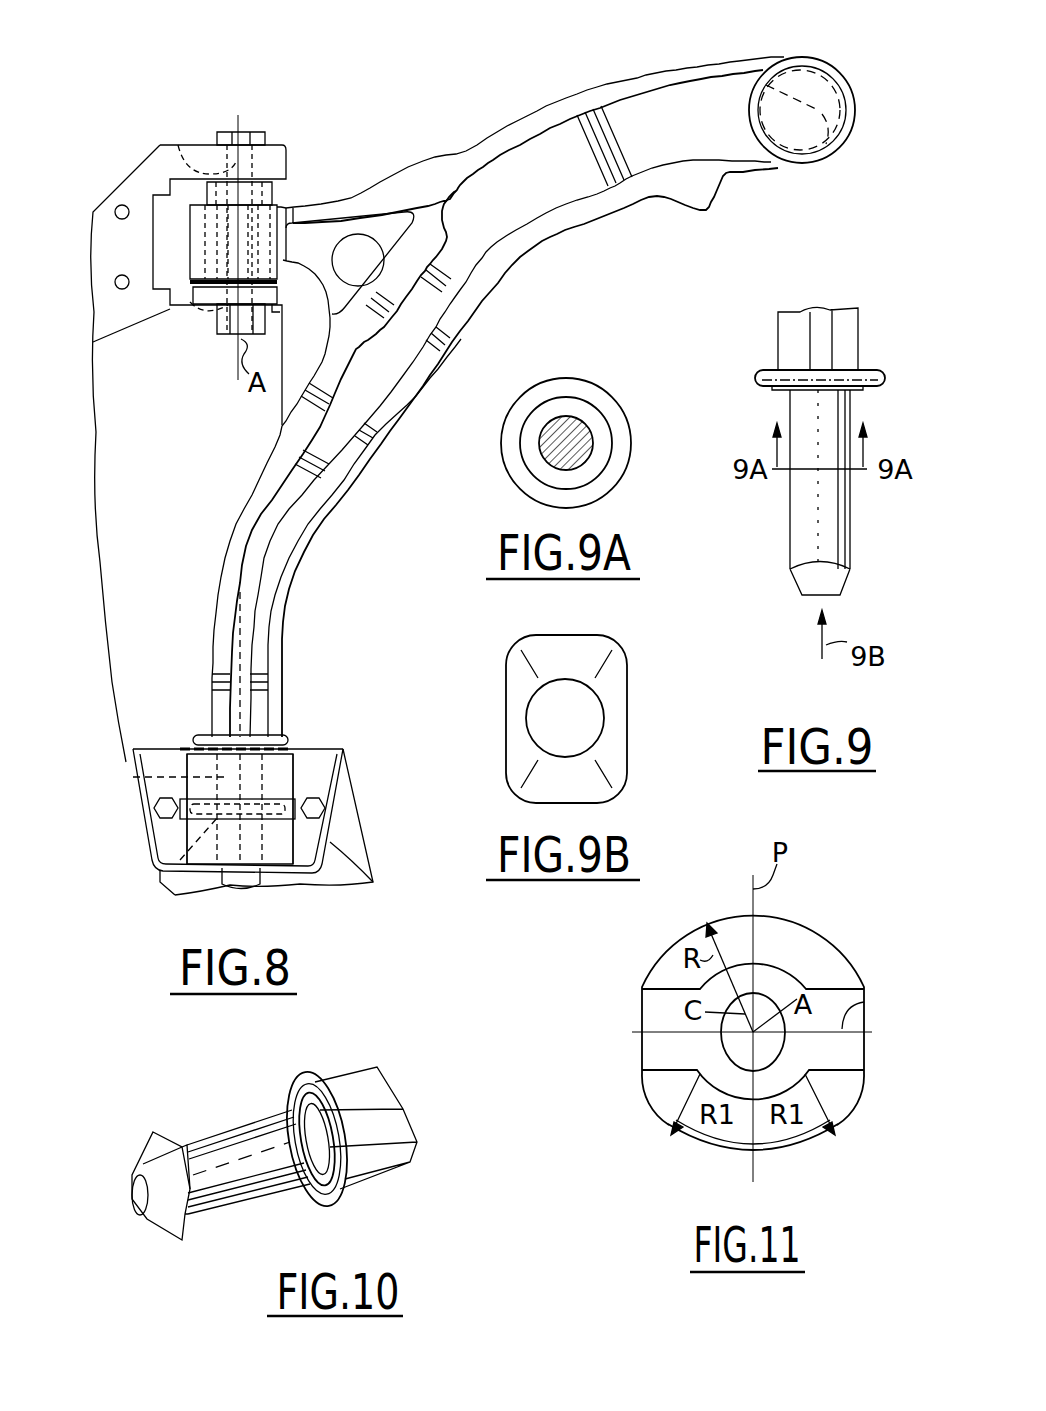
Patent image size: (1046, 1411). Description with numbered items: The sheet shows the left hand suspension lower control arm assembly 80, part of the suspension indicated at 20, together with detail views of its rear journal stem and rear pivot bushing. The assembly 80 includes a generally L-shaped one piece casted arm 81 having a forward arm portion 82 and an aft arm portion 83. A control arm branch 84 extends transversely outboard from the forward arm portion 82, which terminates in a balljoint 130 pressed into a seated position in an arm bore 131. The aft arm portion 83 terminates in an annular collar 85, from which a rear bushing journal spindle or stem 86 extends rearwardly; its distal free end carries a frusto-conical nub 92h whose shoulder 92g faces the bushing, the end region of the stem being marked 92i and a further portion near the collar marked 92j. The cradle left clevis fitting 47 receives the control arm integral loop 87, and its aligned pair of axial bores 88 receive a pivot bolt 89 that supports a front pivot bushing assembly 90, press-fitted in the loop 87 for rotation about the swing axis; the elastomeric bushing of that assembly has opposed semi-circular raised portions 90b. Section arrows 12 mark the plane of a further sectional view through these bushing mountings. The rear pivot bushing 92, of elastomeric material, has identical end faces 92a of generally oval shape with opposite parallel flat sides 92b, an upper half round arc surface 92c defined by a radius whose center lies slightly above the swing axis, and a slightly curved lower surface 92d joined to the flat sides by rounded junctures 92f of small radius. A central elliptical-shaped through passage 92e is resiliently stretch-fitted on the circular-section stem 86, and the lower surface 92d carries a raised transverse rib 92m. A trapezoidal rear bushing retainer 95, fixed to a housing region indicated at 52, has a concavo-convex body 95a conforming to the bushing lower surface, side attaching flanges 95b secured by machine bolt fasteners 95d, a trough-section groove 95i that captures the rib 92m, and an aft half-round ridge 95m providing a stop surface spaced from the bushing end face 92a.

In FIG. 8, the section line indicator 12 is at (240, 118).
In FIG. 8, the suspension assembly 20 is at (393, 66).
In FIG. 8, the cradle left clevis fitting 47 is at (126, 180).
In FIG. 8, the frame mount 52 is at (370, 856).
In FIG. 8, the suspension lower control arm assembly 80 is at (680, 58).
In FIG. 8, the one piece casted arm 81 is at (623, 75).
In FIG. 9B, the one piece casted arm 81 is at (628, 727).
In FIG. 9, the one piece casted arm 81 is at (779, 334).
In FIG. 10, the one piece casted arm 81 is at (377, 1057).
In FIG. 8, the forward arm portion 82 is at (746, 57).
In FIG. 8, the aft arm portion 83 is at (310, 547).
In FIG. 9, the aft arm portion 83 is at (793, 323).
In FIG. 10, the aft arm portion 83 is at (345, 1072).
In FIG. 8, the control arm branch 84 is at (352, 200).
In FIG. 8, the annular collar 85 is at (296, 735).
In FIG. 9A, the annular collar 85 is at (586, 384).
In FIG. 9, the annular collar 85 is at (868, 372).
In FIG. 10, the annular collar 85 is at (297, 1072).
In FIG. 8, the rear bushing journal stem 86 is at (161, 779).
In FIG. 9A, the rear bushing journal stem 86 is at (588, 433).
In FIG. 9, the rear bushing journal stem 86 is at (800, 503).
In FIG. 10, the rear bushing journal stem 86 is at (223, 1130).
In FIG. 8, the control arm integral loop 87 is at (190, 237).
In FIG. 8, the axial bores 88 is at (177, 143).
In FIG. 8, the pivot bolt 89 is at (229, 129).
In FIG. 8, the front pivot bushing assembly 90 is at (279, 190).
In FIG. 8, the semi-circular raised portions 90b is at (206, 292).
In FIG. 11, the rear pivot bushing 92 is at (835, 937).
In FIG. 11, the end faces 92a is at (800, 930).
In FIG. 11, the flat sides 92b is at (642, 1000).
In FIG. 11, the upper half round arc surface 92c is at (788, 910).
In FIG. 11, the lower surface 92d is at (813, 1140).
In FIG. 11, the elliptical-shaped through passage 92e is at (777, 1043).
In FIG. 10, the rounded junctures 92f is at (143, 1157).
In FIG. 11, the rounded junctures 92f is at (657, 1117).
In FIG. 8, the shoulder 92g is at (182, 862).
In FIG. 8, the frusto-conical shaped nub 92h is at (228, 884).
In FIG. 9B, the bolt tip 92i is at (609, 691).
In FIG. 9, the bolt tip 92i is at (837, 582).
In FIG. 10, the collar 92j is at (165, 1140).
In FIG. 11, the rib 92m is at (862, 997).
In FIG. 8, the rear bushing retainer 95 is at (340, 820).
In FIG. 8, the concavo-convex body 95a is at (301, 763).
In FIG. 8, the side attaching flanges 95b is at (200, 760).
In FIG. 8, the machine bolt fastener 95d is at (325, 801).
In FIG. 8, the trough-section groove 95i is at (360, 862).
In FIG. 8, the half-round ridge 95m is at (178, 888).
In FIG. 8, the balljoint 130 is at (749, 109).
In FIG. 8, the arm bore 131 is at (842, 148).